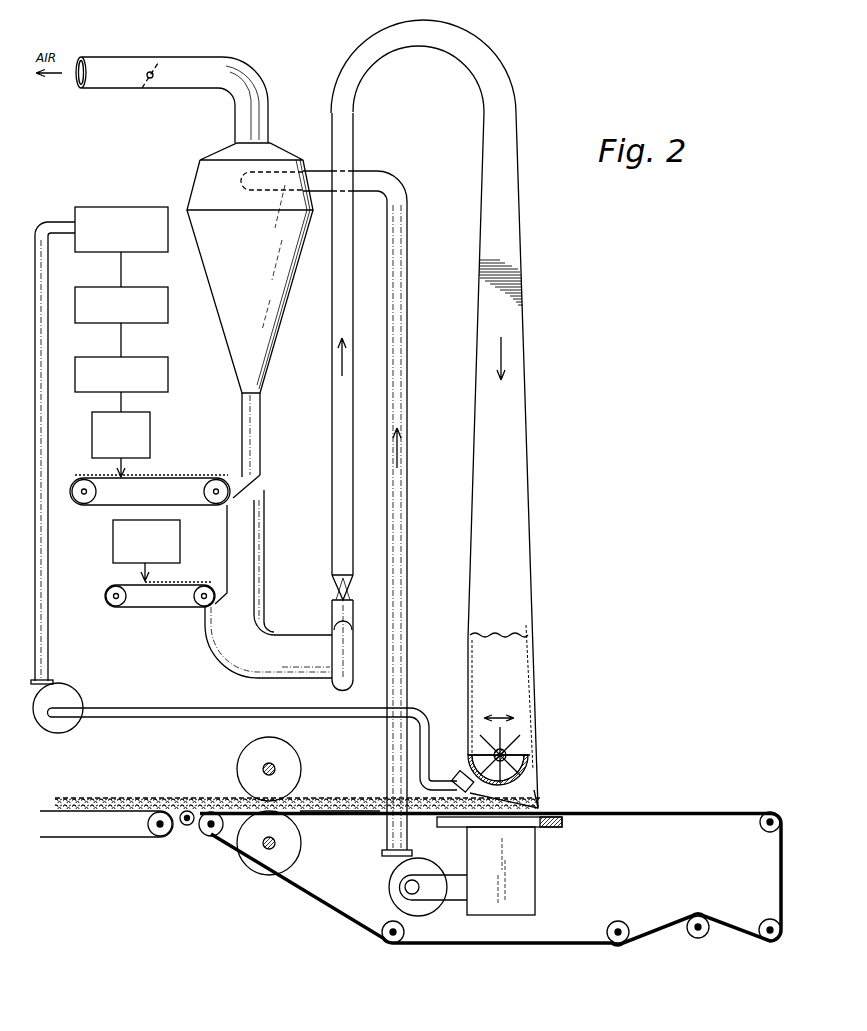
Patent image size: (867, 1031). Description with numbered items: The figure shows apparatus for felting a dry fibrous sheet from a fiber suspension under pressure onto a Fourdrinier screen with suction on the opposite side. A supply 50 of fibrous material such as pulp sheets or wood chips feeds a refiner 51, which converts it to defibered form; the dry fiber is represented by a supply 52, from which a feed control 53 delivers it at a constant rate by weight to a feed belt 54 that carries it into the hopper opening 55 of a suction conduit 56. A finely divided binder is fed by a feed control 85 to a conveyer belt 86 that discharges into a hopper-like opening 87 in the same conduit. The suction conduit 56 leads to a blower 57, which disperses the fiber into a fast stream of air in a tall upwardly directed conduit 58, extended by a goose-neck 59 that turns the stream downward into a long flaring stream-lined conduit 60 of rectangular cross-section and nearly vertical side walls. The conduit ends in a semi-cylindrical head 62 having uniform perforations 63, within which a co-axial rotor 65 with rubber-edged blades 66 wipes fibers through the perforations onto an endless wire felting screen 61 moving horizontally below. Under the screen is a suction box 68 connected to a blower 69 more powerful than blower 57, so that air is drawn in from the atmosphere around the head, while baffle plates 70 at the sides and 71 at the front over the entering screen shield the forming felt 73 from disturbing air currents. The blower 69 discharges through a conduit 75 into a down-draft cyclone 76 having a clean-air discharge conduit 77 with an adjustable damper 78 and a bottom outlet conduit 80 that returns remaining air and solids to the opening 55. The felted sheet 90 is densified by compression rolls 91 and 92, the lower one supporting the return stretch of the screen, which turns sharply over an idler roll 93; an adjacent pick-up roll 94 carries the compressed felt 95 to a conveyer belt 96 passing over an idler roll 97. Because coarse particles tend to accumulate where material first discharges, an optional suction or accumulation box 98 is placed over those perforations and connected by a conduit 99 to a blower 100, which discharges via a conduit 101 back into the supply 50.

The supply 50 is at (139, 207).
The refiner 51 is at (157, 281).
The supply 52 is at (170, 373).
The feed control 53 is at (153, 428).
The feed belt 54 is at (155, 488).
The hopper opening 55 is at (257, 492).
The suction conduit 56 is at (287, 644).
The blower 57 is at (352, 627).
The upwardly directed conduit 58 is at (352, 295).
The goose-neck 59 is at (440, 36).
The flaring stream-lined conduit 60 is at (513, 322).
The endless wire felting screen 61 is at (662, 811).
The semi-cylindrical head 62 is at (505, 788).
The perforations 63 is at (530, 767).
The rotor 65 is at (506, 756).
The blades 66 is at (503, 737).
The suction box 68 is at (540, 826).
The blower 69 is at (437, 856).
The baffle plates 70 is at (539, 794).
The baffle plate 71 is at (542, 802).
The felt 73 is at (488, 810).
The conduit 75 is at (408, 399).
The down-draft cyclone 76 is at (285, 305).
The clean-air discharge conduit 77 is at (218, 62).
The adjustable damper 78 is at (153, 61).
The bottom outlet conduit 80 is at (261, 418).
The feed control 85 is at (113, 538).
The conveyer belt 86 is at (107, 590).
The hopper-like opening 87 is at (223, 584).
The dry felted sheet 90 is at (338, 798).
The compression roll 91 is at (288, 758).
The compression roll 92 is at (294, 854).
The idler roll 93 is at (223, 835).
The pick-up roll 94 is at (184, 827).
The compressed felt 95 is at (178, 800).
The conveyer belt 96 is at (68, 815).
The idler roll 97 is at (151, 828).
The suction or accumulation box 98 is at (462, 773).
The conduit 99 is at (123, 708).
The blower 100 is at (65, 698).
The conduit 101 is at (50, 635).